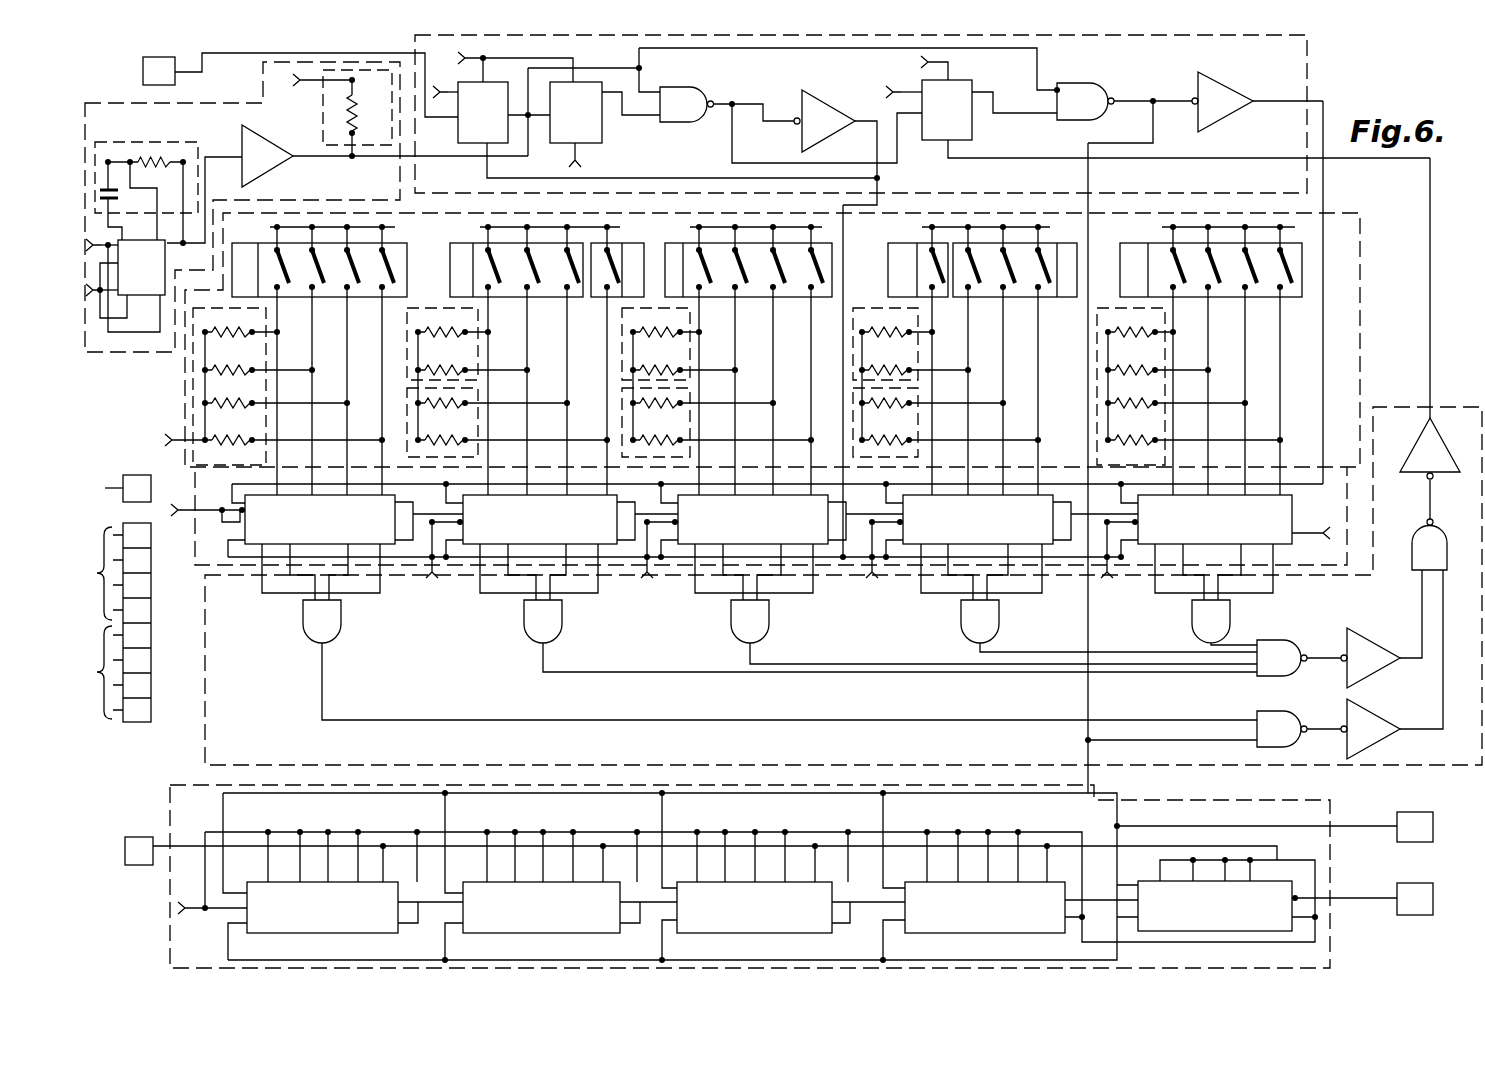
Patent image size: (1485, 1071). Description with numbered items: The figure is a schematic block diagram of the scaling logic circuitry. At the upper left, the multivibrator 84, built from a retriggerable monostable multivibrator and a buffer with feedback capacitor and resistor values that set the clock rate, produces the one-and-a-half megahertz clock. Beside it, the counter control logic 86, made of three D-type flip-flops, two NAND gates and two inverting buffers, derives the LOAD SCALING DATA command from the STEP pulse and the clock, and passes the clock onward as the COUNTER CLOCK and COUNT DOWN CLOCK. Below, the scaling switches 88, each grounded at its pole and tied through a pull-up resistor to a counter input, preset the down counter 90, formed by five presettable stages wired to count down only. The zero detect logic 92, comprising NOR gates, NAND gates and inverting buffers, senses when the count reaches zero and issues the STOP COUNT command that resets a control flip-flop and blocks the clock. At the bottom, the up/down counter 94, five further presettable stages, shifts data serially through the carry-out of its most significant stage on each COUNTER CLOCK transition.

The 1.5 MHz multivibrator 84 is at (104, 103).
The counter control logic 86 is at (1310, 86).
The scaling switches 88 is at (1362, 213).
The down counter 90 is at (195, 566).
The zero detect logic 92 is at (205, 750).
The up/down counter No. 1 94 is at (170, 795).